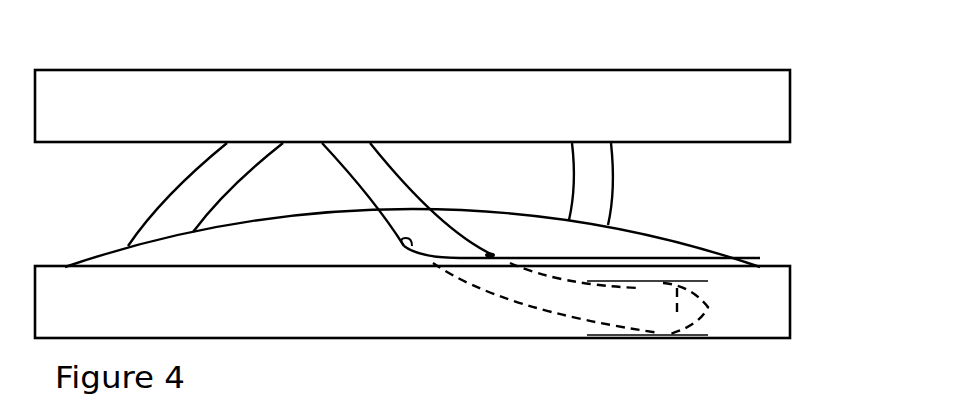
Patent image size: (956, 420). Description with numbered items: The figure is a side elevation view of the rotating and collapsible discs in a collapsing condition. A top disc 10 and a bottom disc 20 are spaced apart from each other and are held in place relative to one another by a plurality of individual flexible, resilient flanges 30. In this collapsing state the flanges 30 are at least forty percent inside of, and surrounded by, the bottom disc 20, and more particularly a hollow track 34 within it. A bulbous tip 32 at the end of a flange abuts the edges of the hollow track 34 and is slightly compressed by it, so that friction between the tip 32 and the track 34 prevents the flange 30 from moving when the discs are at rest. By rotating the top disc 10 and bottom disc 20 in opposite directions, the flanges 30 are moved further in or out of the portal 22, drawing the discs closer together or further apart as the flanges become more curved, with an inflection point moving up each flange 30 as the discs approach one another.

The top disc 10 is at (762, 108).
The bottom disc 20 is at (633, 236).
The flange 30 is at (398, 200).
The portal 22 is at (760, 258).
The bulbous tip 32 is at (697, 307).
The hollow track 34 is at (640, 281).